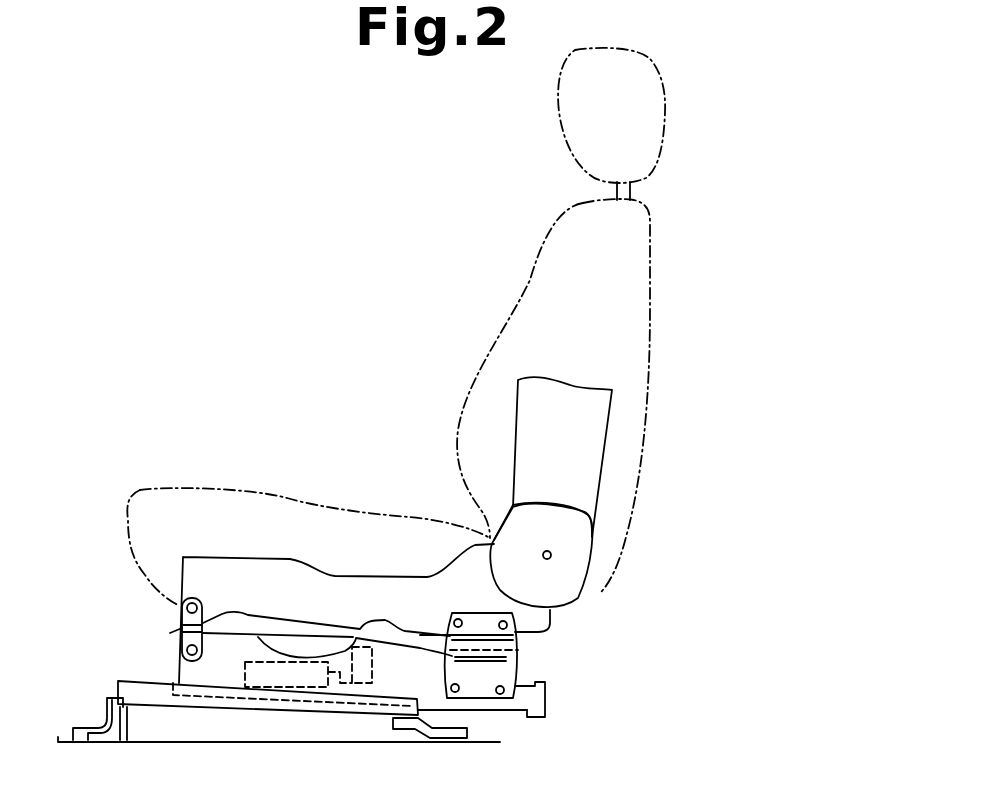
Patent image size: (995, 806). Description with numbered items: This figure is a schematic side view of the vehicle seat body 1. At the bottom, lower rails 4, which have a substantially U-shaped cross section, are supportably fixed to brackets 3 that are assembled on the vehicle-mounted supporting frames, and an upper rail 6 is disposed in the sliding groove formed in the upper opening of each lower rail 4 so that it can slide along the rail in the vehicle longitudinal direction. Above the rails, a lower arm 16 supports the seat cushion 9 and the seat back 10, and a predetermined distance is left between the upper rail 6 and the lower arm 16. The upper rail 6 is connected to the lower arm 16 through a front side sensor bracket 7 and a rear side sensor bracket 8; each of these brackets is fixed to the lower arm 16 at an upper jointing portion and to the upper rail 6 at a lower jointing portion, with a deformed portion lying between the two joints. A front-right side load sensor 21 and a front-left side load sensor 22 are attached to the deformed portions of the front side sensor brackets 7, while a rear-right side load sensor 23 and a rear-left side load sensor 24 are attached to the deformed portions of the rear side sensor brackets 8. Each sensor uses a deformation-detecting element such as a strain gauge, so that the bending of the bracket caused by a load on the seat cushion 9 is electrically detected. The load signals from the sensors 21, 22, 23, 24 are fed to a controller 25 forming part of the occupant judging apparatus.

The seat body 1 is at (468, 290).
The bracket 3 is at (82, 727).
The lower rail 4 is at (128, 680).
The upper rail 6 is at (528, 713).
The front side sensor bracket 7 is at (201, 600).
The rear side sensor bracket 8 is at (483, 612).
The seat cushion 9 is at (190, 486).
The seat back 10 is at (651, 310).
The lower arm 16 is at (277, 567).
The front-right side load sensor 21 is at (246, 635).
The front-left side load sensor 22 is at (178, 624).
The rear-right side load sensor 23 is at (549, 658).
The rear-left side load sensor 24 is at (522, 658).
The controller 25 is at (235, 690).